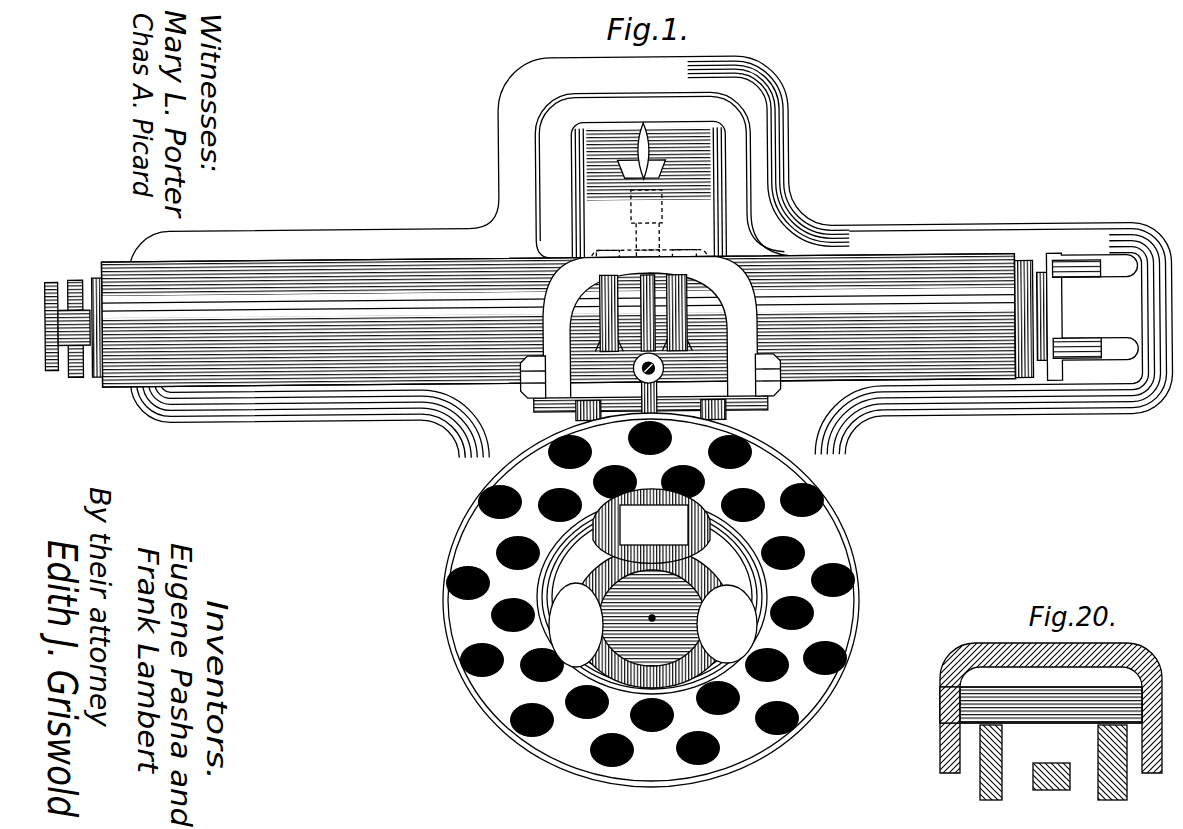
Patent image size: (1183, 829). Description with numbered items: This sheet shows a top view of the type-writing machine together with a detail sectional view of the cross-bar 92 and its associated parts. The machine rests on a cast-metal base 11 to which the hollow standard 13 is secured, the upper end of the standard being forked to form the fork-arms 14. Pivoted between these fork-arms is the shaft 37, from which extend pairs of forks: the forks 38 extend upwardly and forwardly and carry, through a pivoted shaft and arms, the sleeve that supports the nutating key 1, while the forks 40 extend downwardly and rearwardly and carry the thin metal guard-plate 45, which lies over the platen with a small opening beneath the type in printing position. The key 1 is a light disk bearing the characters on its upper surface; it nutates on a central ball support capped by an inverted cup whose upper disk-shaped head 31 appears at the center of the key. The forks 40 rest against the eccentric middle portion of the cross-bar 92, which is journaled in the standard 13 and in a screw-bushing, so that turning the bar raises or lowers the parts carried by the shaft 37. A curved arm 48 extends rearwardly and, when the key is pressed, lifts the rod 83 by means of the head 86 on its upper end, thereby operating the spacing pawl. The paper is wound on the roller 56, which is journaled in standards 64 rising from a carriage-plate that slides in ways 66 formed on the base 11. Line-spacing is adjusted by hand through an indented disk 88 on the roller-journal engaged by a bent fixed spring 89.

In FIG. 1, the key 1 is at (651, 600).
In FIG. 1, the base 11 is at (651, 256).
In FIG. 1, the hollow standard 13 is at (649, 248).
In FIG. 20, the hollow standard 13 is at (1078, 650).
In FIG. 1, the fork-arms 14 is at (655, 344).
In FIG. 1, the disk-shaped head 31 is at (700, 620).
In FIG. 1, the shaft 37 is at (673, 384).
In FIG. 1, the forks 38 is at (588, 418).
In FIG. 1, the forks 40 is at (603, 315).
In FIG. 20, the forks 40 is at (982, 790).
In FIG. 1, the guard-plate 45 is at (740, 327).
In FIG. 1, the curved arm 48 is at (643, 273).
In FIG. 20, the curved arm 48 is at (1051, 789).
In FIG. 1, the paper-roller 56 is at (558, 320).
In FIG. 1, the standards 64 is at (55, 366).
In FIG. 1, the ways 66 is at (1092, 316).
In FIG. 1, the rod 83 is at (640, 207).
In FIG. 1, the head 86 is at (648, 138).
In FIG. 1, the disk 88 is at (75, 317).
In FIG. 1, the bent fixed spring 89 is at (78, 324).
In FIG. 20, the cross-bar 92 is at (1050, 698).